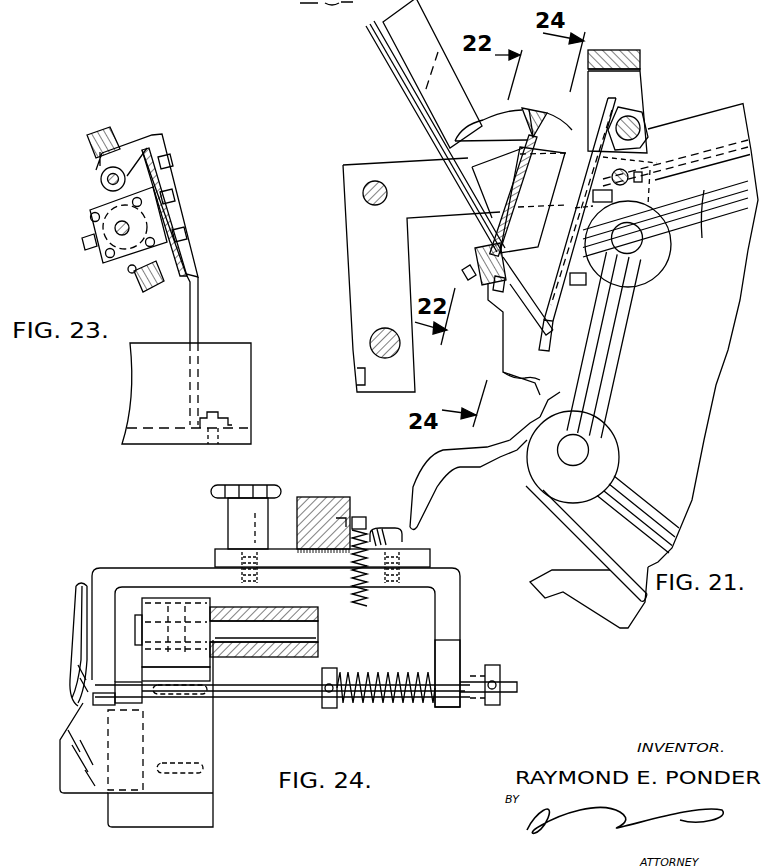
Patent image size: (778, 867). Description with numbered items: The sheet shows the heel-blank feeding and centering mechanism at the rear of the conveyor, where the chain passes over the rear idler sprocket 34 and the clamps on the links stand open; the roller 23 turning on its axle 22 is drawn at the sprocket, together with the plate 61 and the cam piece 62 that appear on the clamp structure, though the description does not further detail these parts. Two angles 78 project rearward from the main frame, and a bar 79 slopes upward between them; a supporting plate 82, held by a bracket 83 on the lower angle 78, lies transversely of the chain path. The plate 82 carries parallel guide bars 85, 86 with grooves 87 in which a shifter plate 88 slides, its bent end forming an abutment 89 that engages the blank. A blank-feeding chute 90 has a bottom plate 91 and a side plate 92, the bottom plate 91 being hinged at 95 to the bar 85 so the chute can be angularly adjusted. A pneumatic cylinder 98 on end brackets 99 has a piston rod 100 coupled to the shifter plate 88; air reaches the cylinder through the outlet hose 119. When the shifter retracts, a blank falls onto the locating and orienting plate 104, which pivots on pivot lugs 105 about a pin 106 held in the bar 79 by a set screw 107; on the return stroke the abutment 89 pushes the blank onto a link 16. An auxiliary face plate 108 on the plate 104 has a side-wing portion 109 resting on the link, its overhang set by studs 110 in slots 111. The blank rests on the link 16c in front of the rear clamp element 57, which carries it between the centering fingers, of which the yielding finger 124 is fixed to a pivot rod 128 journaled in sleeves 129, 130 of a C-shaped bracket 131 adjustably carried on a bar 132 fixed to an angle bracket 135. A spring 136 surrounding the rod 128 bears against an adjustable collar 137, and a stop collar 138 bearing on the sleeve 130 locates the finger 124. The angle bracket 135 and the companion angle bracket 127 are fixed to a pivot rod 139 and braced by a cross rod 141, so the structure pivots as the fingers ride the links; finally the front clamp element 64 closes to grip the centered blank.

In FIG. 21, the link 16 is at (705, 240).
In FIG. 21, the chain link 16c is at (615, 350).
In FIG. 21, the roller axle 22 is at (629, 255).
In FIG. 21, the roller 23 is at (660, 280).
In FIG. 21, the rear idler sprocket 34 is at (706, 409).
In FIG. 21, the rear clamp element 57 is at (505, 317).
In FIG. 21, the plate 61 is at (447, 12).
In FIG. 21, the cam piece 62 is at (520, 385).
In FIG. 21, the front clamp element 64 is at (507, 126).
In FIG. 23, the angle 78 is at (134, 398).
In FIG. 24, the bar 79 is at (310, 651).
In FIG. 23, the supporting plate 82 is at (170, 197).
In FIG. 23, the bracket 83 is at (200, 303).
In FIG. 23, the guide bar 85 is at (146, 292).
In FIG. 21, the guide bar 85 is at (474, 280).
In FIG. 23, the guide bar 86 is at (104, 128).
In FIG. 21, the guide bar 86 is at (540, 113).
In FIG. 23, the groove 87 is at (101, 161).
In FIG. 21, the groove 87 is at (556, 132).
In FIG. 21, the shifter plate 88 is at (496, 220).
In FIG. 21, the abutment 89 is at (537, 249).
In FIG. 21, the blank-feeding chute 90 is at (384, 62).
In FIG. 21, the bottom plate 91 is at (420, 116).
In FIG. 21, the side plate 92 is at (456, 97).
In FIG. 21, the hinge 95 is at (480, 244).
In FIG. 23, the pneumatic cylinder 98 is at (106, 201).
In FIG. 23, the end bracket 99 is at (104, 256).
In FIG. 23, the piston rod 100 is at (116, 227).
In FIG. 21, the locating and orienting plate 104 is at (550, 348).
In FIG. 24, the locating and orienting plate 104 is at (212, 662).
In FIG. 21, the pivot lug 105 is at (643, 116).
In FIG. 24, the pivot lug 105 is at (180, 612).
In FIG. 21, the pin 106 is at (641, 128).
In FIG. 24, the pin 106 is at (316, 636).
In FIG. 24, the set screw 107 is at (258, 612).
In FIG. 21, the auxiliary face plate 108 is at (558, 302).
In FIG. 24, the auxiliary face plate 108 is at (215, 736).
In FIG. 24, the side-wing portion 109 is at (62, 758).
In FIG. 21, the stud 110 is at (612, 203).
In FIG. 24, the stud 110 is at (163, 762).
In FIG. 24, the slot 111 is at (188, 758).
In FIG. 23, the outlet hose 119 is at (89, 248).
In FIG. 21, the centering finger 124 is at (722, 113).
In FIG. 21, the angle bracket 127 is at (380, 164).
In FIG. 21, the pivot rod 128 is at (643, 184).
In FIG. 24, the pivot rod 128 is at (288, 697).
In FIG. 24, the sleeve 129 is at (133, 682).
In FIG. 24, the sleeve 130 is at (473, 672).
In FIG. 21, the C-shaped bracket 131 is at (642, 60).
In FIG. 24, the C-shaped bracket 131 is at (455, 619).
In FIG. 24, the bar 132 is at (432, 556).
In FIG. 24, the angle bracket 135 is at (338, 496).
In FIG. 24, the spring 136 is at (395, 672).
In FIG. 24, the collar 137 is at (330, 708).
In FIG. 24, the stop collar 138 is at (514, 677).
In FIG. 21, the pivot rod 139 is at (372, 350).
In FIG. 21, the cross rod 141 is at (370, 203).